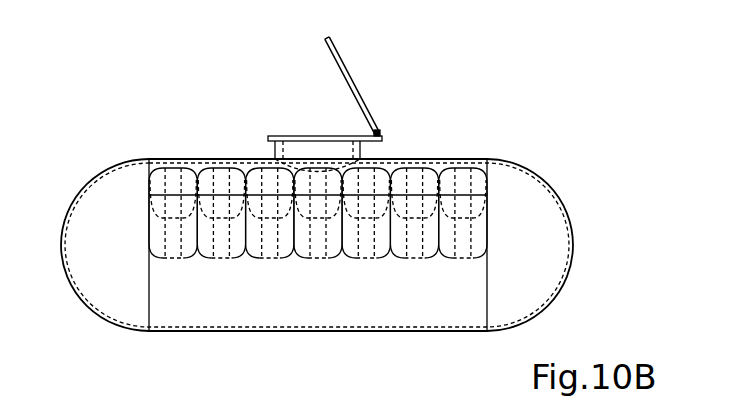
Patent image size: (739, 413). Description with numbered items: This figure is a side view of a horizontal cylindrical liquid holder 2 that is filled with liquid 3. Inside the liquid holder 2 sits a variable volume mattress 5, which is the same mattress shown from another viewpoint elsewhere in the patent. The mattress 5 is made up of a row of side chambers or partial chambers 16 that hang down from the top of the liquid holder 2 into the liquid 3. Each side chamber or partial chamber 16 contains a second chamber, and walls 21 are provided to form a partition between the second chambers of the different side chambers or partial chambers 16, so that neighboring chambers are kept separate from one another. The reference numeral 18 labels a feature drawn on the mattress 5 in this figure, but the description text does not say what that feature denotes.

The liquid holder 2 is at (169, 330).
The liquid 3 is at (226, 309).
The variable volume mattress 5 is at (158, 171).
The side chambers or partial chambers 16 is at (172, 231).
The pod upper section 18 is at (367, 191).
The walls 21 is at (391, 227).